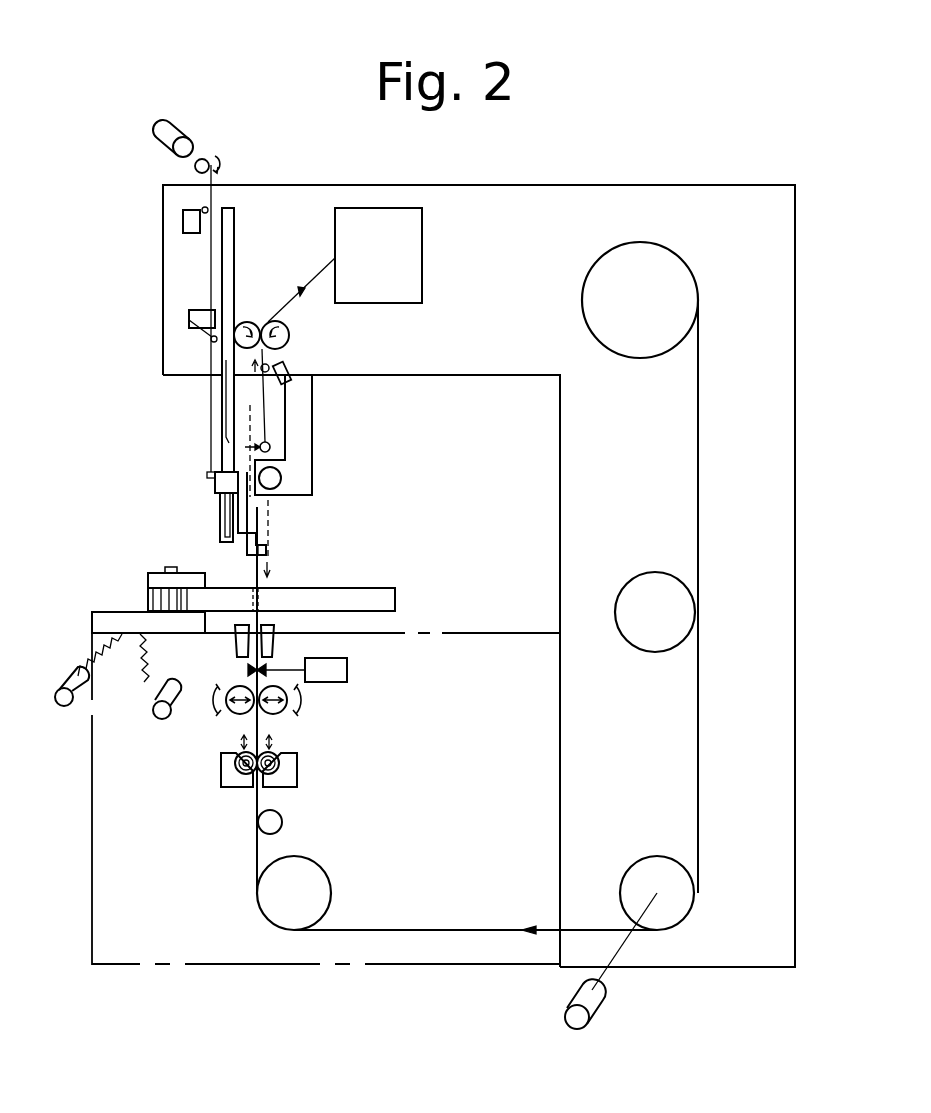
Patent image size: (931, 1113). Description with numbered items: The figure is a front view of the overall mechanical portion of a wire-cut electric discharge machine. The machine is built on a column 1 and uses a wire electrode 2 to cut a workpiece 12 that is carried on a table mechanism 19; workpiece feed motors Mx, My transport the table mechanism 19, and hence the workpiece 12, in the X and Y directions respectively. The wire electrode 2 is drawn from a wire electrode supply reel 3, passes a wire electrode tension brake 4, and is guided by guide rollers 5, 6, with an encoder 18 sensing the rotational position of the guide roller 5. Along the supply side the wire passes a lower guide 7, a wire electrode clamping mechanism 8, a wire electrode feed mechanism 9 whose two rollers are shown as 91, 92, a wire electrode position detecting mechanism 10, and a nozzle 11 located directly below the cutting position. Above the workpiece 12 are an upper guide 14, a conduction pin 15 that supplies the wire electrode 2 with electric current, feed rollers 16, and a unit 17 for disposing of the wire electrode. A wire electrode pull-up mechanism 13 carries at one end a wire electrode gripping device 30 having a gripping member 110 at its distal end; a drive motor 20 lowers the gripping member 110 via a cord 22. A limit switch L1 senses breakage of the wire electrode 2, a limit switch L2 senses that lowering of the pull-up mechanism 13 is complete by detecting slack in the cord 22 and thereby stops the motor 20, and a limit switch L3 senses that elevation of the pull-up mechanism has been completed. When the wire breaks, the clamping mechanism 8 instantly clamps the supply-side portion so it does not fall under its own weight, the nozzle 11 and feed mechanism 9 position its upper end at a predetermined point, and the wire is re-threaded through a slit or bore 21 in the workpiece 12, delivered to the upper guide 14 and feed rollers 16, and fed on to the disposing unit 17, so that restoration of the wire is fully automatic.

The column 1 is at (722, 955).
The wire electrode 2 is at (698, 511).
The wire electrode supply reel 3 is at (648, 312).
The wire electrode tension brake 4 is at (649, 652).
The guide roller 5 is at (649, 868).
The guide roller 6 is at (326, 896).
The lower guide 7 is at (282, 822).
The wire electrode clamping mechanism 8 is at (297, 780).
The wire electrode feed mechanism 9 is at (282, 719).
The feed roller 91 is at (236, 712).
The feed roller 92 is at (278, 713).
The wire electrode position detecting mechanism 10 is at (347, 670).
The nozzle 11 is at (275, 645).
The workpiece 12 is at (375, 592).
The wire electrode pull-up mechanism 13 is at (216, 520).
The upper guide 14 is at (281, 478).
The conduction pin 15 is at (270, 447).
The feed rollers 16 is at (289, 335).
The disposing unit 17 is at (396, 300).
The encoder 18 is at (588, 1028).
The table mechanism 19 is at (127, 612).
The drive motor 20 is at (183, 127).
The slit or bore 21 is at (262, 600).
The cord 22 is at (220, 277).
The wire electrode gripping device 30 is at (262, 515).
The gripping member 110 is at (272, 547).
The limit switch L1 is at (290, 366).
The limit switch L2 is at (183, 228).
The limit switch L3 is at (189, 322).
The workpiece feed motor Mx is at (64, 706).
The workpiece feed motor My is at (160, 719).